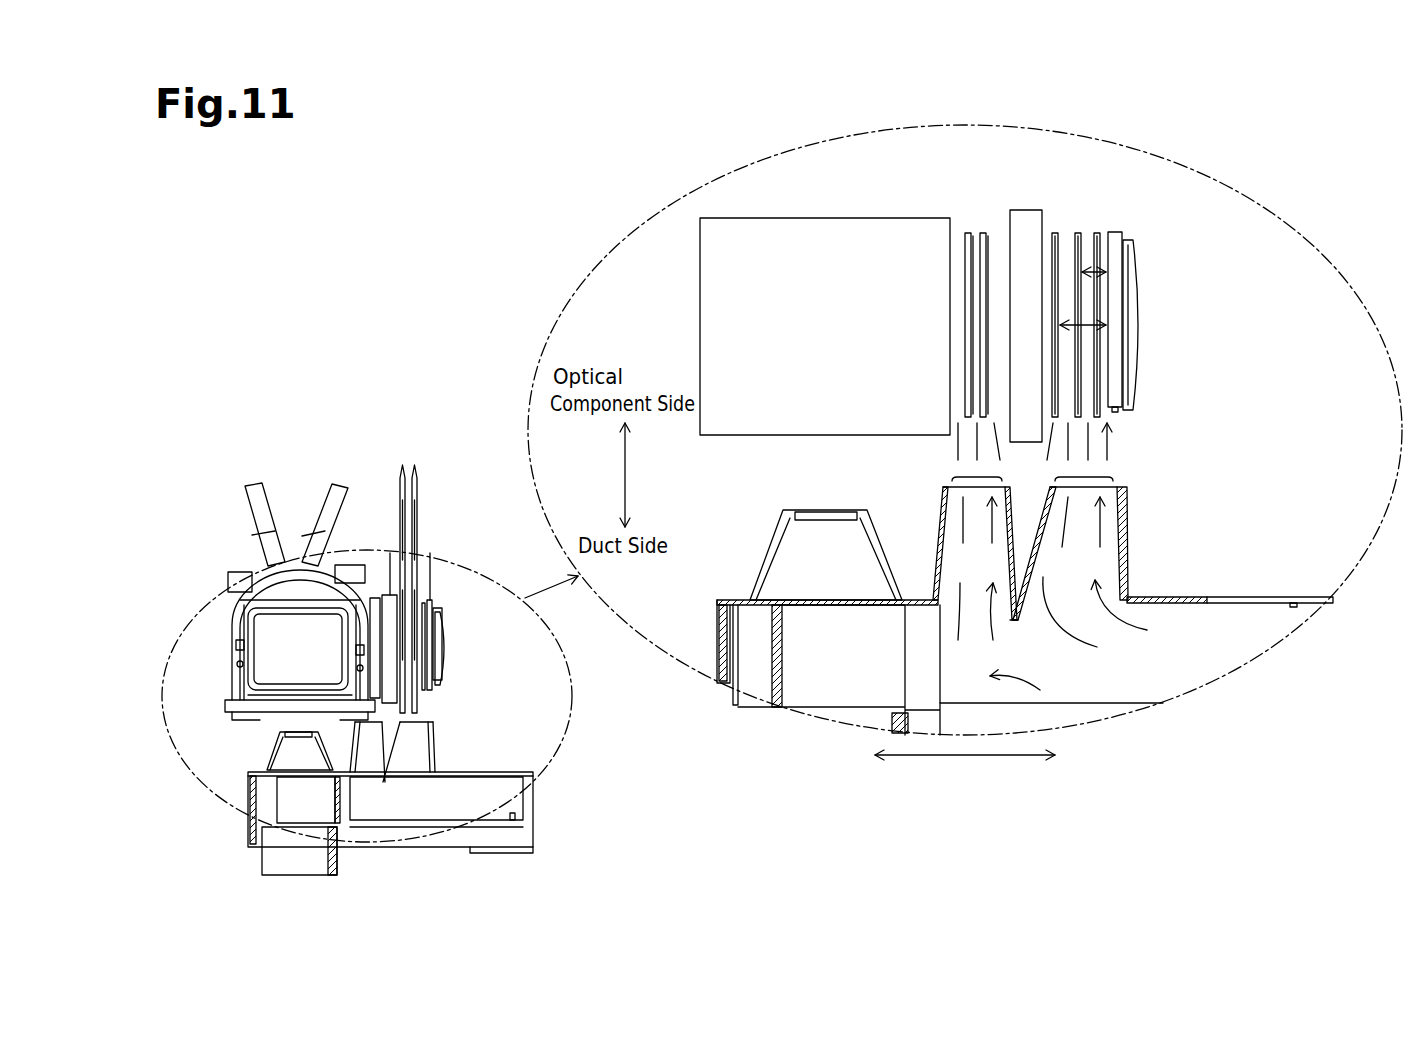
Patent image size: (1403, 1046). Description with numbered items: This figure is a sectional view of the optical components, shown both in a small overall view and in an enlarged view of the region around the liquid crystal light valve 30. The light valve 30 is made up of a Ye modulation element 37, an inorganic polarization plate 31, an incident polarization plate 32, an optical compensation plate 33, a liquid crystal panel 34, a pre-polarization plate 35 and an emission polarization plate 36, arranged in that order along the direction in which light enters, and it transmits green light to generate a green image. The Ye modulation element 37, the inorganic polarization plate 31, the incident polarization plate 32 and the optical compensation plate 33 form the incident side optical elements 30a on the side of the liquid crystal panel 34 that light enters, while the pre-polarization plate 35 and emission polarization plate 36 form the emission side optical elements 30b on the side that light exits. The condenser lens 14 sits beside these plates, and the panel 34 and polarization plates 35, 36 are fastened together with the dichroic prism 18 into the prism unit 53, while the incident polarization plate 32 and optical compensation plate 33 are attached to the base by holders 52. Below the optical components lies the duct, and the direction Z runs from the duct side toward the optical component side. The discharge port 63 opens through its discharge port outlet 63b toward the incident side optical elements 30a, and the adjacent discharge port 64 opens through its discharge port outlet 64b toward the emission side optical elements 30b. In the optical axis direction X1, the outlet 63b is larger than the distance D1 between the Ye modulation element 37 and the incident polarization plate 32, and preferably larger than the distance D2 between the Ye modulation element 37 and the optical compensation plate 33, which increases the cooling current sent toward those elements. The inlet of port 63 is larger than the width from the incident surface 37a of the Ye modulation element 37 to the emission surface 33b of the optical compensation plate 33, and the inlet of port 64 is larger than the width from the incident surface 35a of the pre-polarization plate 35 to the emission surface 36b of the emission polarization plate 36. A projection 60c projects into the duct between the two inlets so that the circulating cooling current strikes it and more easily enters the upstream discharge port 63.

The condenser lens 14 is at (445, 647).
The dichroic prism 18 is at (818, 218).
The liquid crystal light valve 30 is at (1108, 97).
The incident side optical elements 30a is at (1152, 168).
The emission side optical elements 30b is at (1005, 168).
The inorganic polarization plate 31 is at (1097, 232).
The incident polarization plate 32 is at (1078, 232).
The optical compensation plate 33 is at (1056, 232).
The emission surface of the optical compensation plate 33b is at (1058, 352).
The liquid crystal panel 34 is at (378, 618).
The pre-polarization plate 35 is at (981, 232).
The incident surface of the pre-polarization plate 35a is at (987, 387).
The emission polarization plate 36 is at (968, 232).
The emission surface of the emission polarization plate 36b is at (967, 385).
The Ye modulation element 37 is at (1116, 232).
The incident surface of the Ye modulation element 37a is at (1128, 393).
The holder 52 is at (405, 475).
The prism unit 53 is at (241, 556).
The projection 60c is at (1012, 622).
The discharge port 63 is at (437, 737).
The discharge port outlet 63b is at (1100, 476).
The discharge port 64 is at (347, 750).
The discharge port outlet 64b is at (962, 476).
The distance between the Ye modulation element and the incident polarization plate D1 is at (1100, 288).
The distance between the Ye modulation element and the optical compensation plate D2 is at (1093, 343).
The optical axis direction X1 is at (960, 758).
The direction from duct side to optical component side Z is at (627, 473).